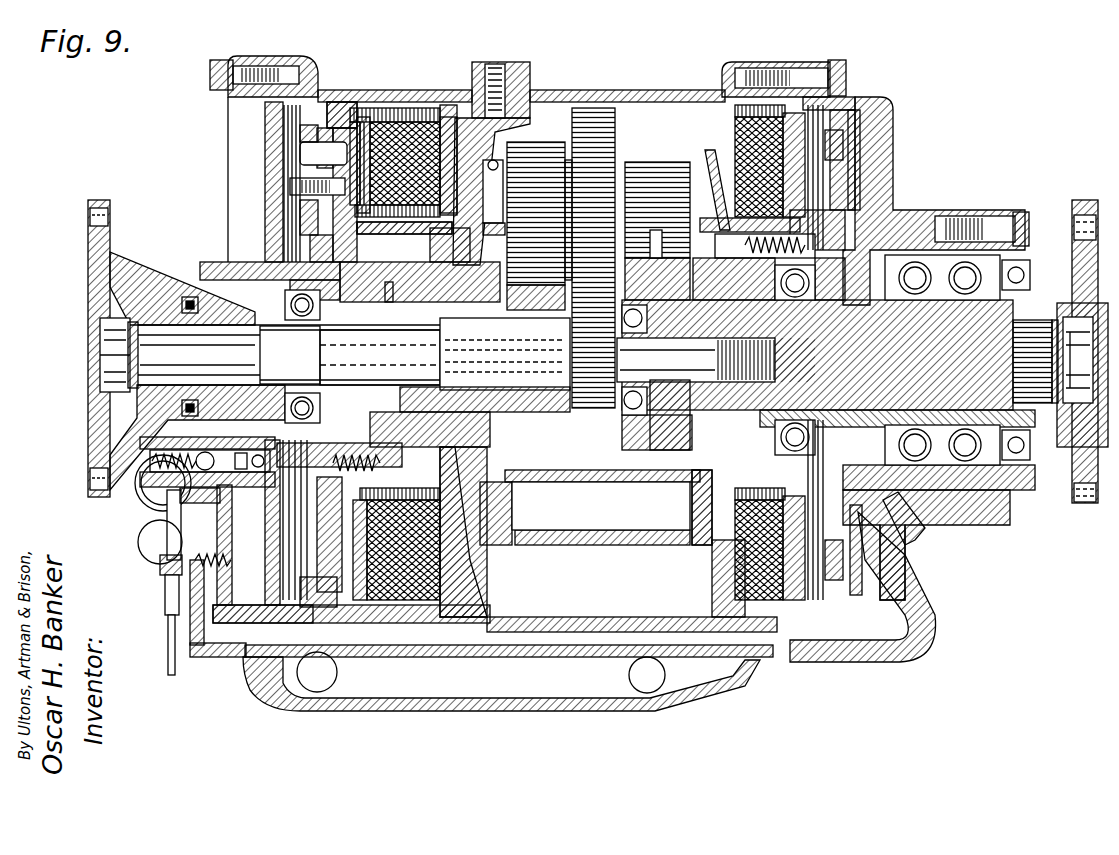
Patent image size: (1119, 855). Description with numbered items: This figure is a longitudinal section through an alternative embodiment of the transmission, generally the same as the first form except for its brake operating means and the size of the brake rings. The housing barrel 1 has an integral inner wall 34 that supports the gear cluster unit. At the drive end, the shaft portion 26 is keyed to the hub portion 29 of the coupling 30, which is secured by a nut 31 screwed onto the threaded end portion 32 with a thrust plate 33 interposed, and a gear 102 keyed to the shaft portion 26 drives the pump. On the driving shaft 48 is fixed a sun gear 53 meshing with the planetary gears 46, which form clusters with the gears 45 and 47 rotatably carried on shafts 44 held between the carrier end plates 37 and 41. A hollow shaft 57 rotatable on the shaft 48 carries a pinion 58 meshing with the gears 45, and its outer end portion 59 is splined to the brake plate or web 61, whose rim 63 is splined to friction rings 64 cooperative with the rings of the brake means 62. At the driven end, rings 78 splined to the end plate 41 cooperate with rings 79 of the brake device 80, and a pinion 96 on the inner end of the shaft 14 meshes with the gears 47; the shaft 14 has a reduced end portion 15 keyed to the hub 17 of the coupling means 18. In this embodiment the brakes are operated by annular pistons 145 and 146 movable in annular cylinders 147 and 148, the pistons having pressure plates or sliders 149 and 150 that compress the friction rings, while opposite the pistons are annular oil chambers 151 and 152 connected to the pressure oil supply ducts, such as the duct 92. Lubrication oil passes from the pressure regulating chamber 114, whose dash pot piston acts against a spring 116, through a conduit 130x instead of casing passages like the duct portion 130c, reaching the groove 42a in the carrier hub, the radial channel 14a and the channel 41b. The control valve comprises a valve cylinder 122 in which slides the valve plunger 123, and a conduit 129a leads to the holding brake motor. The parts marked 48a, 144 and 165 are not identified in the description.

The housing barrel 1 is at (440, 92).
The shaft 14 is at (843, 335).
The radial channel 14a is at (748, 398).
The reduced end portion 15 is at (1045, 465).
The hub 17 is at (1035, 300).
The coupling means 18 is at (1085, 200).
The shaft portion 26 is at (135, 360).
The hub portion 29 is at (108, 302).
The coupling 30 is at (88, 233).
The nut 31 is at (100, 326).
The threaded end portion 32 is at (100, 346).
The thrust plate 33 is at (118, 400).
The inner wall 34 is at (487, 575).
The end plate 37 is at (601, 506).
The end plate 41 is at (692, 480).
The channel 41b is at (690, 292).
The concentric groove 42a is at (792, 348).
The shafts 44 is at (660, 200).
The planetary gear 45 is at (520, 150).
The planetary gear 46 is at (592, 110).
The planetary gear 47 is at (630, 175).
The shaft 48 is at (393, 285).
The threaded shaft portion 48a is at (696, 348).
The sun gear 53 is at (505, 354).
The hollow shaft 57 is at (380, 357).
The gear or pinion 58 is at (545, 413).
The outer end portion 59 is at (313, 355).
The brake plate or web 61 is at (385, 465).
The brake means 62 is at (412, 117).
The rim 63 is at (380, 230).
The friction disklike rings 64 is at (455, 117).
The disk-like rings 78 is at (745, 245).
The disk-like rings 79 is at (715, 175).
The clutch or brake device 80 is at (757, 112).
The duct 92 is at (895, 648).
The gear or pinion 96 is at (625, 440).
The gear 102 is at (215, 284).
The pressure regulating chest 114 is at (150, 500).
The spring 116 is at (165, 535).
The valve cylinder 122 is at (160, 580).
The control valve plunger 123 is at (148, 560).
The conduit 129a is at (168, 660).
The duct portion 130c is at (902, 442).
The conduit 130x is at (925, 530).
The stop 144 is at (215, 492).
The annular piston 145 is at (300, 132).
The annular piston 146 is at (868, 115).
The annular cylinder 147 is at (340, 102).
The annular cylinder 148 is at (880, 105).
The pressure plate or slider 149 is at (364, 112).
The pressure plate or slider 150 is at (840, 112).
The annular oil chamber 151 is at (287, 168).
The annular oil chamber 152 is at (900, 548).
The spacer 165 is at (383, 115).